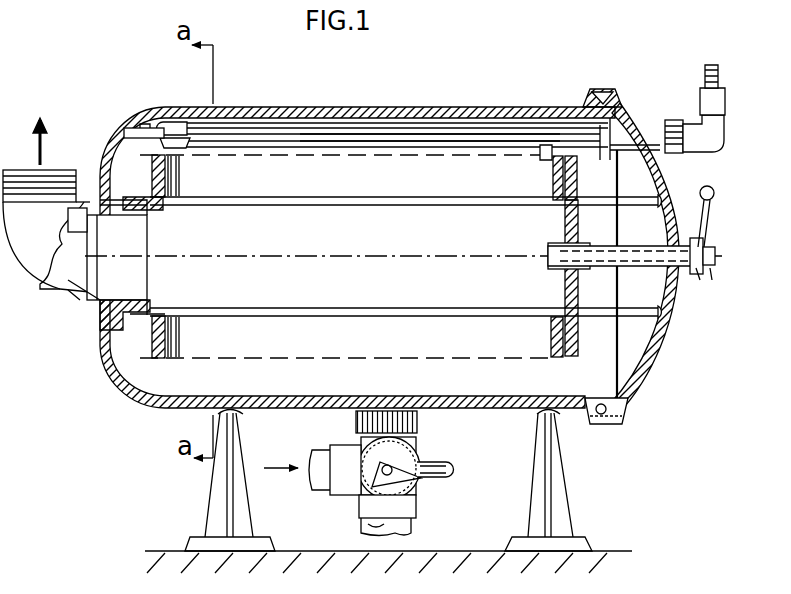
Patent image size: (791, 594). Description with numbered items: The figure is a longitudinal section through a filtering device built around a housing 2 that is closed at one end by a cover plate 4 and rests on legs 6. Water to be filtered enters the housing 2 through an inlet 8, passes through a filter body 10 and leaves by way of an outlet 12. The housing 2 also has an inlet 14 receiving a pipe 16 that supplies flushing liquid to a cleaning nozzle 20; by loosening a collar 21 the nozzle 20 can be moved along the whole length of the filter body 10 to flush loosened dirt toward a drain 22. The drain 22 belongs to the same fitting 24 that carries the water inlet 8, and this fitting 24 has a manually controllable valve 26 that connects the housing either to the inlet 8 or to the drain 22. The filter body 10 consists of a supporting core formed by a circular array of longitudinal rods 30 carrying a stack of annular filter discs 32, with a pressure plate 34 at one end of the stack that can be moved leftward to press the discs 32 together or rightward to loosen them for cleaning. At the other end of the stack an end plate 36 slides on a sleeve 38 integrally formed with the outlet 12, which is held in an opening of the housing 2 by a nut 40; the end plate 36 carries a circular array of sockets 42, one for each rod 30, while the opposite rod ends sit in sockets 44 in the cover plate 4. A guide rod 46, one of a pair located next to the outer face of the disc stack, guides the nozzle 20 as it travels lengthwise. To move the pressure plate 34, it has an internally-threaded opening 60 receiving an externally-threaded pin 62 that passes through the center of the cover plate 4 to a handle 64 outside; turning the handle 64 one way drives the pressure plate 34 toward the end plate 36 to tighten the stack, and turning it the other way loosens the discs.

The housing 2 is at (505, 155).
The cover plate 4 is at (638, 398).
The legs 6 is at (218, 497).
The inlet 8 is at (320, 486).
The filter body 10 is at (528, 110).
The outlet 12 is at (56, 180).
The inlet 14 is at (662, 126).
The pipe 16 is at (709, 138).
The cleaning nozzle 20 is at (173, 124).
The collar 21 is at (673, 125).
The flushing outlet or drain 22 is at (414, 528).
The fitting 24 is at (426, 493).
The manually controllable valve 26 is at (448, 470).
The rods 30 is at (603, 200).
The annular filter discs 32 is at (548, 150).
The pressure plate 34 is at (577, 157).
The end plate 36 is at (155, 175).
The sleeve 38 is at (122, 226).
The nut 40 is at (100, 339).
The sockets 42 is at (120, 378).
The sockets 44 is at (660, 320).
The guide rod 46 is at (394, 108).
The internally-threaded opening 60 is at (577, 245).
The externally-threaded pin 62 is at (630, 248).
The handle 64 is at (690, 208).